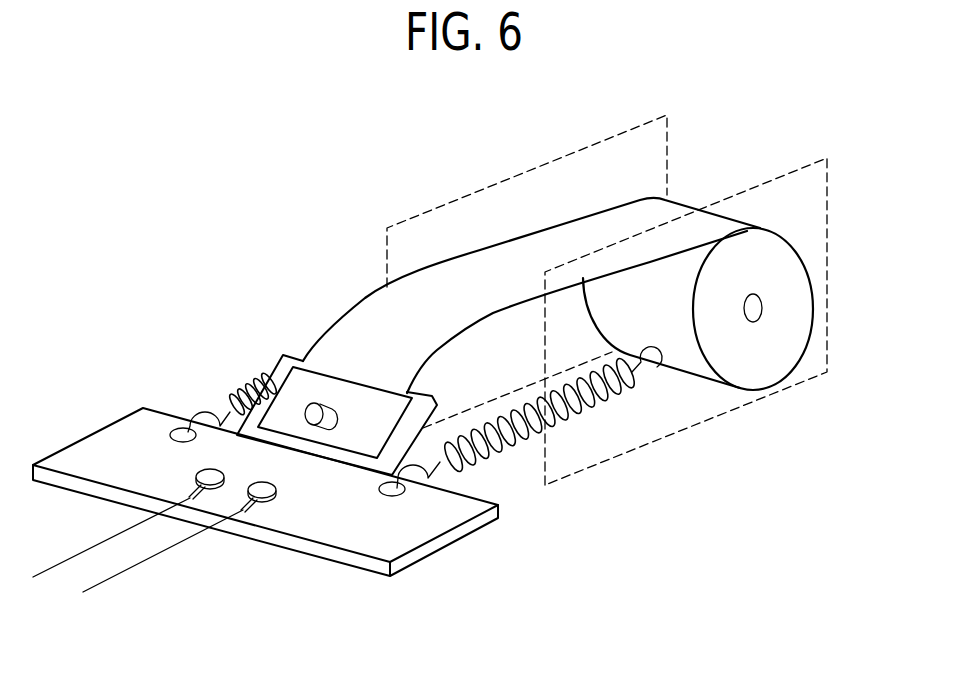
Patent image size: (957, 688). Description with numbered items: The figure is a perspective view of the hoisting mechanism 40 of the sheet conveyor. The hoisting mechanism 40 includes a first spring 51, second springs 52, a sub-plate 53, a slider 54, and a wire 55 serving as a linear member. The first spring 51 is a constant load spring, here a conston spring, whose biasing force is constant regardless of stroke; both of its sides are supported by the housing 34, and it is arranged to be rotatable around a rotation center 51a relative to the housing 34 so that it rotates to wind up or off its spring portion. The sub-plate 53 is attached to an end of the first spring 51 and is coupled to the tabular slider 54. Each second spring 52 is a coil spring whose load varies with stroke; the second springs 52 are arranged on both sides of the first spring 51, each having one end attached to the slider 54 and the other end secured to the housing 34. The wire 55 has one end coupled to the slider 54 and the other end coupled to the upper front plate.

The housing 34 is at (503, 183).
The hoisting mechanism 40 is at (721, 121).
The first spring 51 is at (763, 367).
The rotation center 51a is at (757, 308).
The second spring 52 is at (567, 430).
The sub-plate 53 is at (298, 382).
The slider 54 is at (347, 528).
The wire 55 is at (163, 554).